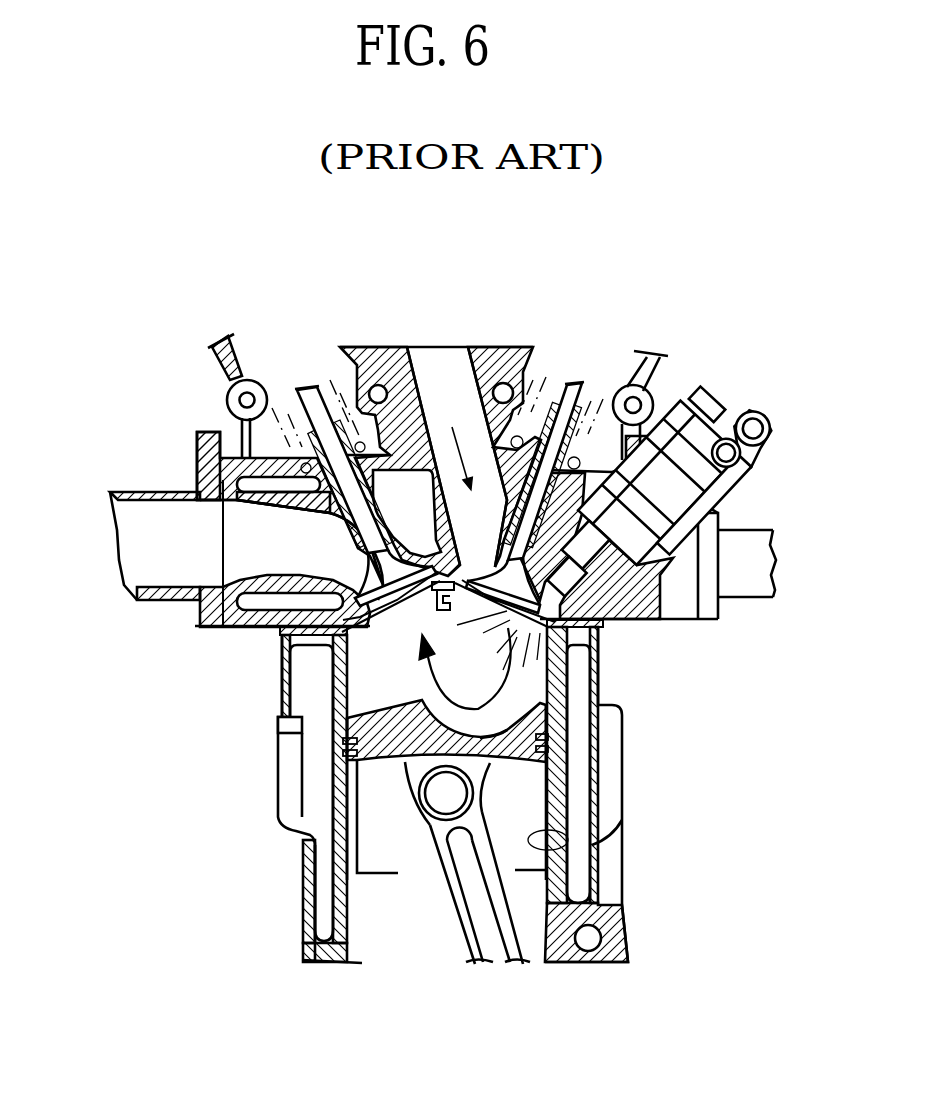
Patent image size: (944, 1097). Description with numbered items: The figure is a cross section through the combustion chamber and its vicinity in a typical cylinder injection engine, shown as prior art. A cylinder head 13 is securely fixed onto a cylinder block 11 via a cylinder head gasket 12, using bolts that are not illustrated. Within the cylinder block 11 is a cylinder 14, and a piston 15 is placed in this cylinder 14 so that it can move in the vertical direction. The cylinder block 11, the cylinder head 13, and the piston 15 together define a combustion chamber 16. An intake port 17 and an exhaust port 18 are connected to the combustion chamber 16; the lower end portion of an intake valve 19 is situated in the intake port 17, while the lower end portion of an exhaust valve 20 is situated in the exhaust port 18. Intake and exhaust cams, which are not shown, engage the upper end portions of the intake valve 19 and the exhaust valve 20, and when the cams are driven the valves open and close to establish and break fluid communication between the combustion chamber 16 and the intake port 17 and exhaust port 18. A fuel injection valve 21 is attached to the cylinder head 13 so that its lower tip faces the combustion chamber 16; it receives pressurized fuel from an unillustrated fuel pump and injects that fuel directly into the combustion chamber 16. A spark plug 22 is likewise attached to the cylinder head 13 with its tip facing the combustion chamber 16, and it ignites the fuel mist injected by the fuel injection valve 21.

The cylinder block 11 is at (313, 953).
The cylinder head gasket 12 is at (300, 633).
The cylinder head 13 is at (640, 613).
The cylinder 14 is at (530, 860).
The piston 15 is at (375, 728).
The combustion chamber 16 is at (523, 703).
The intake port 17 is at (436, 366).
The exhaust port 18 is at (243, 540).
The intake valve 19 is at (563, 385).
The exhaust valve 20 is at (307, 413).
The fuel injection valve 21 is at (750, 478).
The spark plug 22 is at (430, 600).